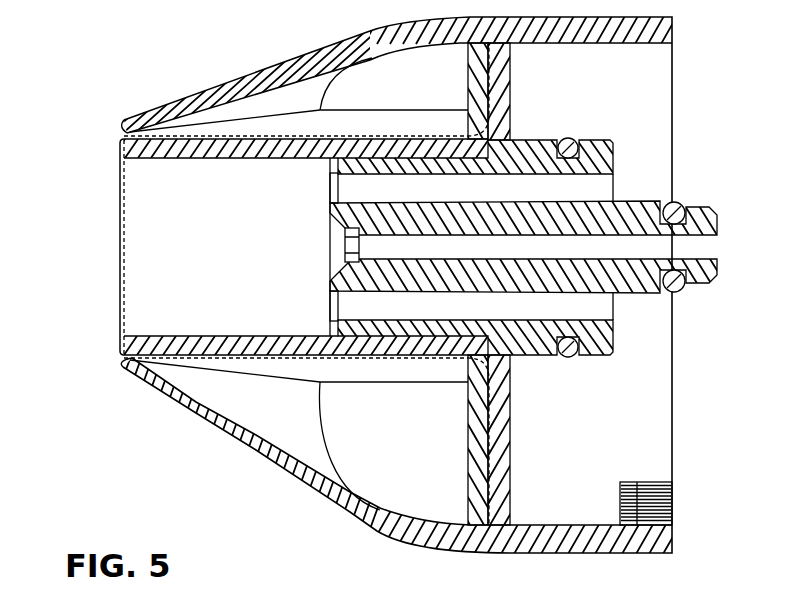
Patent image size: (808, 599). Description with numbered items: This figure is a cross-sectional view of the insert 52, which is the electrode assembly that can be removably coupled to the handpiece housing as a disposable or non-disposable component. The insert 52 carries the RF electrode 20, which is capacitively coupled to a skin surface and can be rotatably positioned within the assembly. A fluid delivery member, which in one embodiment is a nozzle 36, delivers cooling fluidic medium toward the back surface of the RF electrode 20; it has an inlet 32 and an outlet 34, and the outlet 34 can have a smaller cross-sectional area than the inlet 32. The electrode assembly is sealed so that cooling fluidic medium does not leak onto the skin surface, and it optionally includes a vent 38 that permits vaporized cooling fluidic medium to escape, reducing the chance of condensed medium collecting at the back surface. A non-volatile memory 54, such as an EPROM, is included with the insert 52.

The RF electrode 20 is at (120, 243).
The inlet 32 is at (717, 247).
The outlet 34 is at (336, 227).
The nozzle 36 is at (343, 251).
The vent 38 is at (330, 191).
The insert 52 is at (233, 443).
The non-volatile memory 54 is at (637, 482).